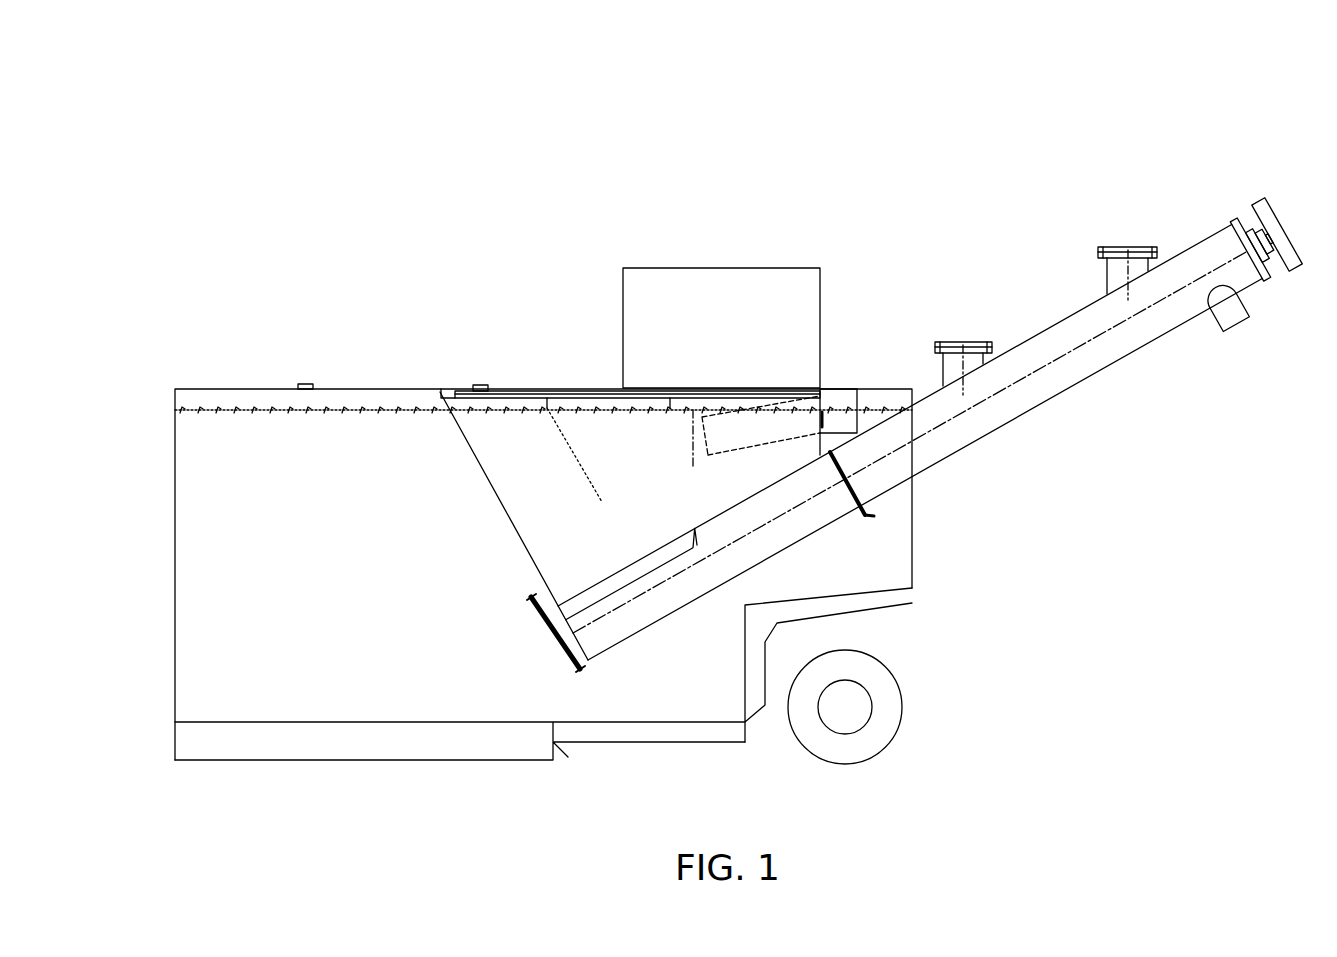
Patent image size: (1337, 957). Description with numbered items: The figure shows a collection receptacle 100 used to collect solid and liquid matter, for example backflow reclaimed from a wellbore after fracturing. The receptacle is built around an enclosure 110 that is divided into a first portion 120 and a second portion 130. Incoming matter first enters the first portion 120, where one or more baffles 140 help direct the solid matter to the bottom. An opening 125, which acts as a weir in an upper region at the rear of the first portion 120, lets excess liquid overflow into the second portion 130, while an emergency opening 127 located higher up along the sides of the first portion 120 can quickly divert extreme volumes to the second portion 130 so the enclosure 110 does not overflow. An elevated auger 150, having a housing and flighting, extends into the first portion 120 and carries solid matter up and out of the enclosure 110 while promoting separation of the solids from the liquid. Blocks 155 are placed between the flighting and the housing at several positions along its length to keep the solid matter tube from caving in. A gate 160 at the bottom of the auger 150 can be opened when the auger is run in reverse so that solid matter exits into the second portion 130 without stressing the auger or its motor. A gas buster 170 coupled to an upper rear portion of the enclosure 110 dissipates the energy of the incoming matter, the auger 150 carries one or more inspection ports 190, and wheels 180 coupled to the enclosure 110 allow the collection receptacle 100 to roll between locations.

The collection receptacle 100 is at (180, 143).
The enclosure 110 is at (184, 368).
The first portion 120 is at (592, 557).
The opening 125 is at (823, 408).
The emergency opening 127 is at (515, 397).
The second portion 130 is at (712, 712).
The baffles 140 is at (582, 463).
The elevated auger 150 is at (1075, 378).
The blocks 155 is at (697, 530).
The gate 160 is at (531, 597).
The gas buster 170 is at (648, 277).
The wheels 180 is at (900, 712).
The inspection ports 190 is at (972, 342).